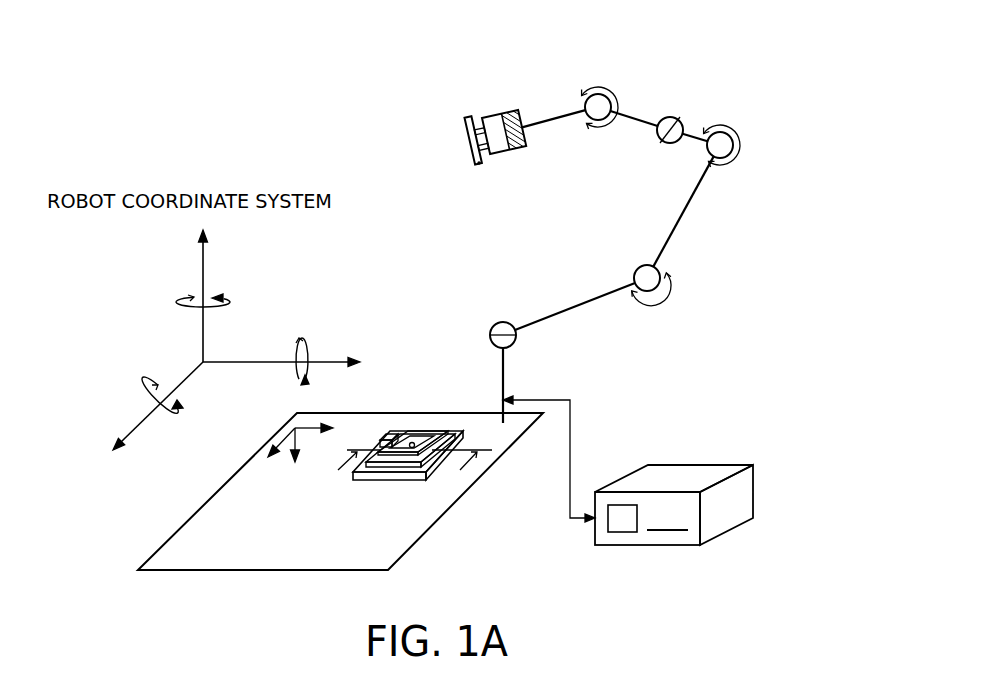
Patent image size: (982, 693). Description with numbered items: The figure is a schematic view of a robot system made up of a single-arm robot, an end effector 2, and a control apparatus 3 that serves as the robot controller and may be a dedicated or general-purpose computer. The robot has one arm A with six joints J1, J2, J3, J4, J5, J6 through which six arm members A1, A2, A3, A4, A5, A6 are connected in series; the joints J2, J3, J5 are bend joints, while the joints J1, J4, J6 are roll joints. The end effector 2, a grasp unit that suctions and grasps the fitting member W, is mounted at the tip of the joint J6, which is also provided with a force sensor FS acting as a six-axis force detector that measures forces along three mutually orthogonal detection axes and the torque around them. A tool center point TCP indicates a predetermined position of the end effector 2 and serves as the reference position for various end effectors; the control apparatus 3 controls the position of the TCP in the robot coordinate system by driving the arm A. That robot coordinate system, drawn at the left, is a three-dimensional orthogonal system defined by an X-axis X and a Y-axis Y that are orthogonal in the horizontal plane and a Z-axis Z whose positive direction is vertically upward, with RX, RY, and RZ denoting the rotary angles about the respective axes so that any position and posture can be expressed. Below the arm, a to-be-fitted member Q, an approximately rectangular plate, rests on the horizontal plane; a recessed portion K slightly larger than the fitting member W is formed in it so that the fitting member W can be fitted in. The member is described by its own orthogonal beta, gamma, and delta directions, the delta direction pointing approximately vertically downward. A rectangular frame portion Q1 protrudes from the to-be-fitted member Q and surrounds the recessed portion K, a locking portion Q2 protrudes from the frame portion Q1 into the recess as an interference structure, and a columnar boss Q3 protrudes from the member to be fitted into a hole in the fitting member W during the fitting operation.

The arm A is at (707, 44).
The arm member A1 is at (554, 385).
The arm member A2 is at (597, 312).
The arm member A3 is at (715, 211).
The arm member A4 is at (729, 120).
The arm member A5 is at (607, 80).
The arm member A6 is at (507, 80).
The joint J1 is at (545, 347).
The joint J2 is at (692, 293).
The joint J3 is at (761, 158).
The joint J4 is at (718, 103).
The joint J5 is at (566, 99).
The joint J6 is at (470, 109).
The force sensor FS is at (552, 143).
The end effector 2 is at (477, 141).
The tool center point TCP is at (545, 201).
The fitting member W is at (464, 126).
The control apparatus 3 is at (707, 505).
The to-be-fitted member Q is at (421, 497).
The frame portion Q1 is at (368, 481).
The locking portion Q2 is at (438, 366).
The boss Q3 is at (435, 415).
The recessed portion K is at (444, 398).
The X-axis X is at (291, 363).
The Y-axis Y is at (147, 419).
The Z-axis Z is at (190, 291).
The rotary angle around the X-axis RX is at (309, 375).
The rotary angle around the Y-axis RY is at (147, 382).
The rotary angle around the Z-axis RZ is at (222, 298).